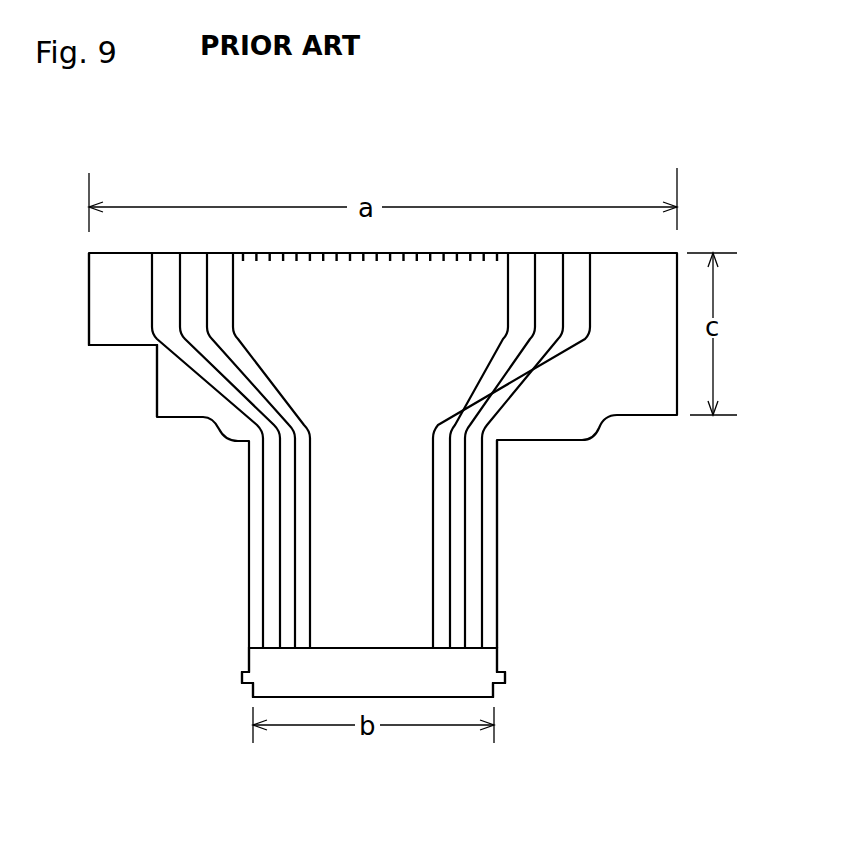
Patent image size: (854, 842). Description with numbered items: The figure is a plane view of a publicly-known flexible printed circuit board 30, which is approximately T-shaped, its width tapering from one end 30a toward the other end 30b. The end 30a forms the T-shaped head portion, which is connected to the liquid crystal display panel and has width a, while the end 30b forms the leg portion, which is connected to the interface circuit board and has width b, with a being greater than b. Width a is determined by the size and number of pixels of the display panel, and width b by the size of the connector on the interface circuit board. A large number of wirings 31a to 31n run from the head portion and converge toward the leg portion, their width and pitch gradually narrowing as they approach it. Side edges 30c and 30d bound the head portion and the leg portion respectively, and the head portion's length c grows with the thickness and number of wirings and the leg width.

The flexible printed circuit board 30 is at (386, 109).
The end 30a is at (583, 253).
The end 30b is at (468, 696).
The side edge of wide portion 30c is at (89, 320).
The side edge of narrow portion 30d is at (497, 553).
The wiring 31a is at (207, 403).
The wiring 31n is at (530, 403).